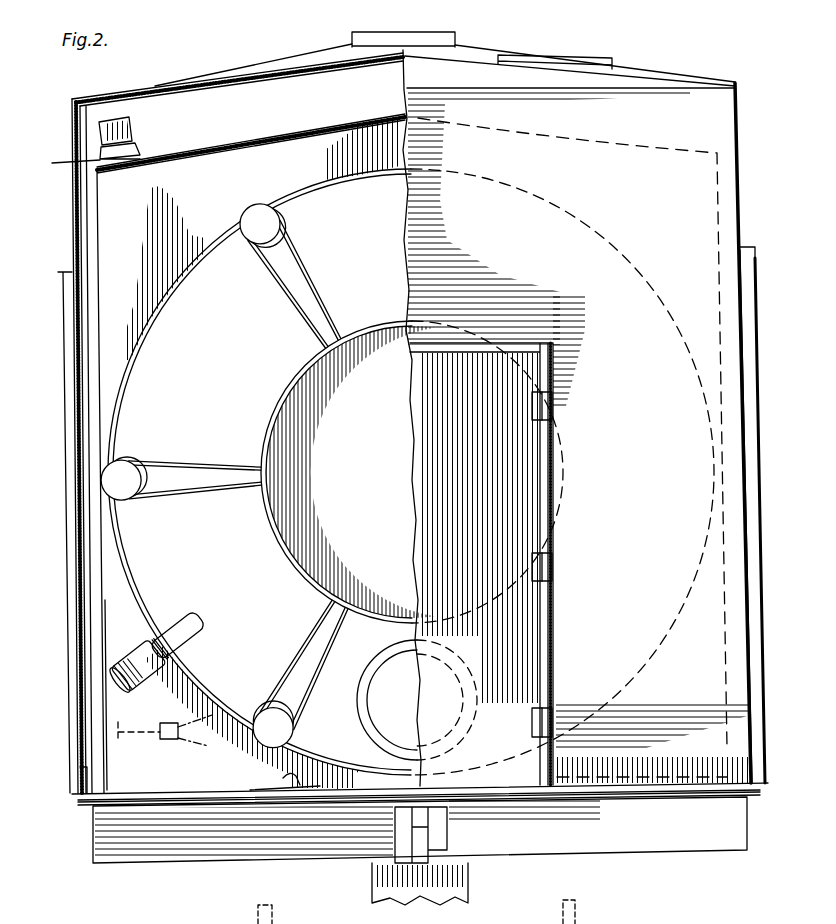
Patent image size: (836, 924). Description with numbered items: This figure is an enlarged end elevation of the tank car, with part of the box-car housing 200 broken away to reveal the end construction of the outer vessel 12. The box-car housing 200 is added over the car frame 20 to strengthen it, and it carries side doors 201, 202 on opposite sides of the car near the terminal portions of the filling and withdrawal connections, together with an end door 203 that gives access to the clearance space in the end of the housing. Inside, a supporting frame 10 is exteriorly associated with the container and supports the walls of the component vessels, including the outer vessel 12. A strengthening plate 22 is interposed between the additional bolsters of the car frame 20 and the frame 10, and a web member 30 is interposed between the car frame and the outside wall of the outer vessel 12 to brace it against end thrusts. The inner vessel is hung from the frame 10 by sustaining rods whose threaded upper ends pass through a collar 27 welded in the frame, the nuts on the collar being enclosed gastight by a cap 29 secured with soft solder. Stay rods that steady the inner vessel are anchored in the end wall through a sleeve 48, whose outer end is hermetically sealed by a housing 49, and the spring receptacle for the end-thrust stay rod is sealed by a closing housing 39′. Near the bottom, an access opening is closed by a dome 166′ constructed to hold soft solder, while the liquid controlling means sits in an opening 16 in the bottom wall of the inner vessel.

The supporting frame 10 is at (206, 150).
The outer vessel 12 is at (346, 176).
The opening 16 is at (200, 748).
The car frame 20 is at (94, 831).
The strengthening plate 22 is at (637, 790).
The collar 27 is at (63, 164).
The cap 29 is at (131, 127).
The web member 30 is at (290, 779).
The closing housing 39′ is at (258, 208).
The sleeve 48 is at (186, 616).
The housing 49 is at (110, 671).
The dome 166′ is at (390, 716).
The box-car housing 200 is at (741, 124).
The side door 201 is at (68, 470).
The side door 202 is at (757, 418).
The end door 203 is at (518, 678).